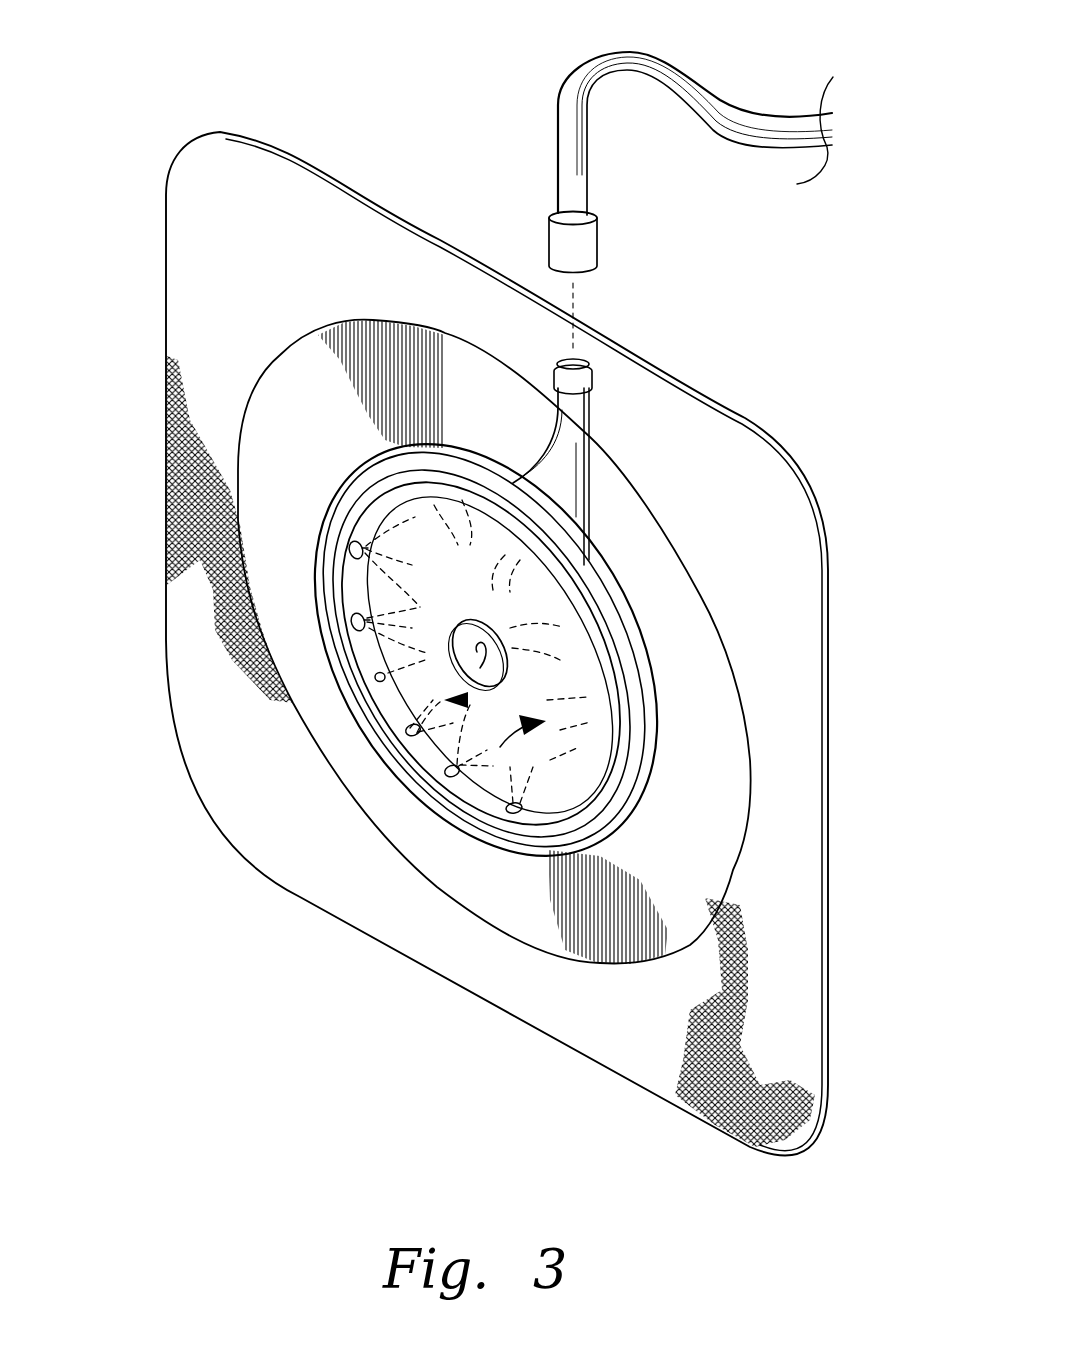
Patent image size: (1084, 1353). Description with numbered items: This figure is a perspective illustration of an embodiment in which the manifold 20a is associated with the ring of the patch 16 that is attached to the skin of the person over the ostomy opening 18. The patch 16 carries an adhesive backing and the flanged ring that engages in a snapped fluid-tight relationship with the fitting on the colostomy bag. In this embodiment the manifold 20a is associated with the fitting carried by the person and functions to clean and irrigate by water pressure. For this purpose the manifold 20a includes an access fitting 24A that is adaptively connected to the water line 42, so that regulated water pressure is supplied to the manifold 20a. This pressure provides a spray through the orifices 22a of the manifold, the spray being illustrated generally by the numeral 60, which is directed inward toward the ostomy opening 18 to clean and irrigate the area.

The patch 16 is at (777, 553).
The ostomy opening 18 is at (508, 663).
The manifold 20a is at (616, 721).
The orifices 22a is at (358, 628).
The access fitting 24A is at (578, 415).
The water line 42 is at (710, 93).
The spray 60 is at (468, 700).